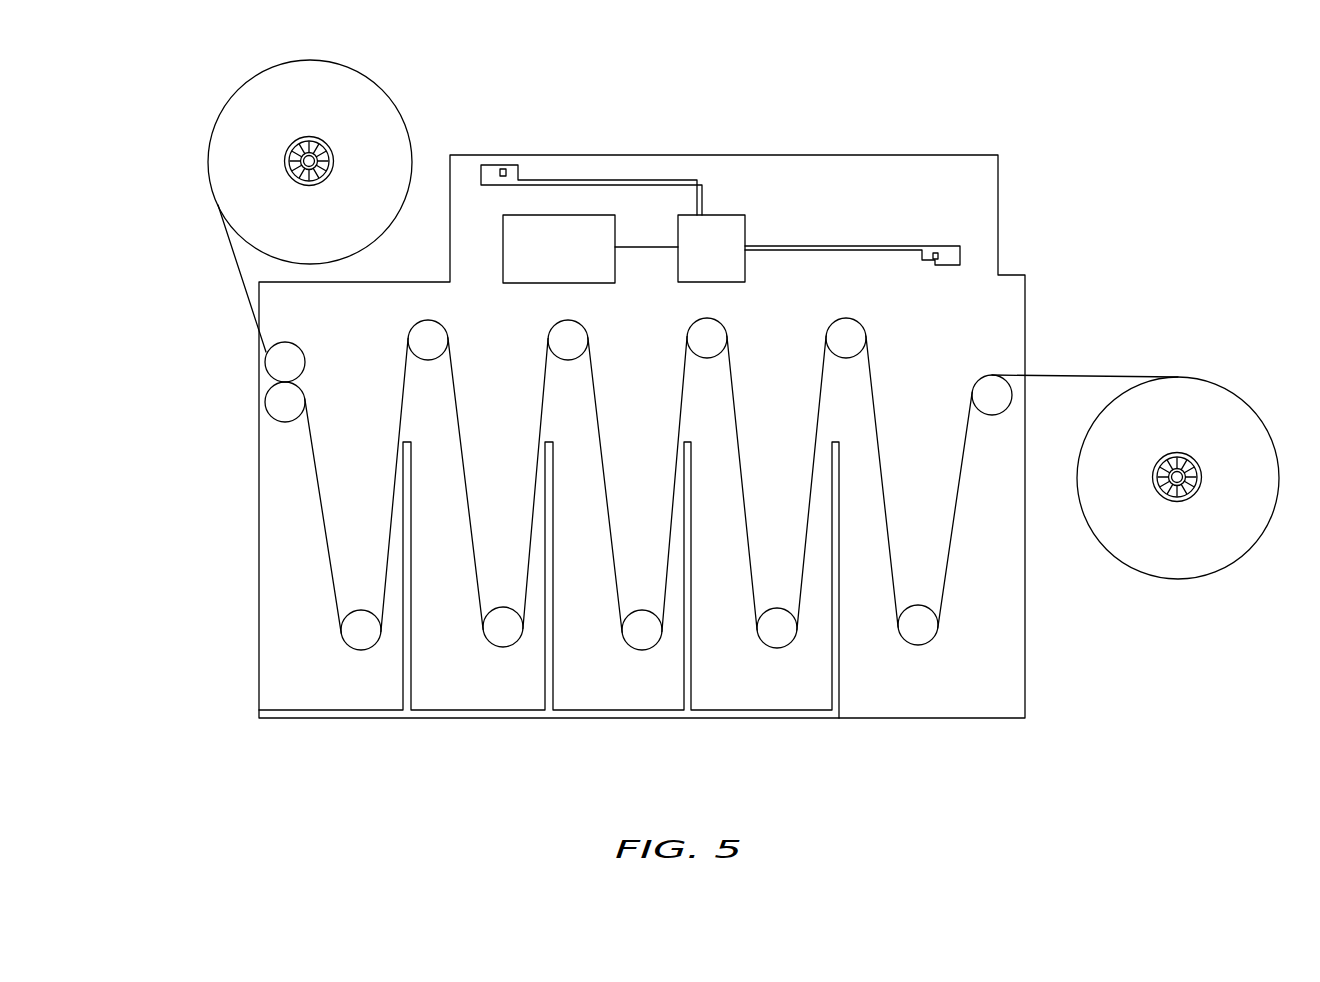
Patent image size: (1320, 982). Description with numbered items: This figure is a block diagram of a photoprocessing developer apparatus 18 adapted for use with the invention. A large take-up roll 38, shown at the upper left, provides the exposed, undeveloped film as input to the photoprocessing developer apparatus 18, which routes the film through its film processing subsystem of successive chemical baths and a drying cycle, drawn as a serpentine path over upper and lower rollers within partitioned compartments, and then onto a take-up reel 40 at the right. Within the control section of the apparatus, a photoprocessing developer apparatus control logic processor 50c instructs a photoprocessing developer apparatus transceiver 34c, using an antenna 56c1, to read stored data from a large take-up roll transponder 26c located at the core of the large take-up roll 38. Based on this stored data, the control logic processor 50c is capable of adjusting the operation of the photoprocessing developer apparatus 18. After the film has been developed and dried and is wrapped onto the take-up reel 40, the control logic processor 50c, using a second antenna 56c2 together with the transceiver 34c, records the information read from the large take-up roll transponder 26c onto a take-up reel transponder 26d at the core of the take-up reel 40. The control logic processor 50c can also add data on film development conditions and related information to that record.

The photoprocessing developer apparatus 18 is at (921, 744).
The large take-up roll 38 is at (220, 117).
The take-up reel 40 is at (1267, 530).
The large take-up roll transponder 26c is at (334, 157).
The take-up reel transponder 26d is at (1172, 462).
The photoprocessing developer apparatus control logic processor 50c is at (530, 284).
The photoprocessing developer apparatus transceiver 34c is at (742, 283).
The antenna 56c1 is at (615, 184).
The antenna 56c2 is at (868, 246).